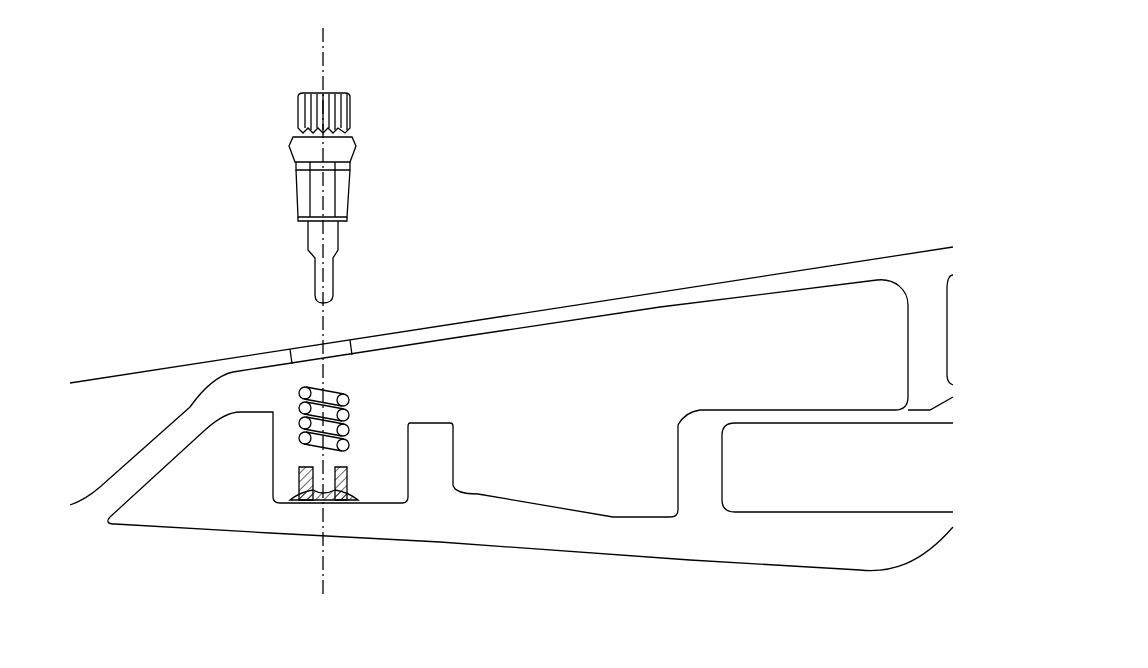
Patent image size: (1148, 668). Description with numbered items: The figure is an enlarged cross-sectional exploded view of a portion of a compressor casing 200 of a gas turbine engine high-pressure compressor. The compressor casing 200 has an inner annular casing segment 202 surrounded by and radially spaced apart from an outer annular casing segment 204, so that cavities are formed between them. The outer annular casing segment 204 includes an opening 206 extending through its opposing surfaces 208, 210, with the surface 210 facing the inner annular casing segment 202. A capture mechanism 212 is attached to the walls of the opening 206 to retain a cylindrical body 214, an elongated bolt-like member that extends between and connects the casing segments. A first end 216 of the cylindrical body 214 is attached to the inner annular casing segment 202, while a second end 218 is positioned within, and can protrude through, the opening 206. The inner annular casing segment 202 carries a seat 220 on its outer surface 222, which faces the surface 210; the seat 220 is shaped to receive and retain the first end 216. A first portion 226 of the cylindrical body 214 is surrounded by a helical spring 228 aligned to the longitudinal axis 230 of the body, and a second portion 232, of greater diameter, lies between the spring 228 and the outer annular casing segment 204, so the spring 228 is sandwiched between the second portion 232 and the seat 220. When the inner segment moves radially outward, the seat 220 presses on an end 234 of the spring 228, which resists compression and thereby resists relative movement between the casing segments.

The compressor casing 200 is at (128, 40).
The inner annular casing segment 202 is at (480, 495).
The outer annular casing segment 204 is at (132, 372).
The opening 206 is at (340, 332).
The surface 208 is at (482, 317).
The surface 210 is at (508, 330).
The capture mechanism 212 is at (345, 360).
The cylindrical body 214 is at (350, 122).
The first end 216 is at (318, 308).
The second end 218 is at (337, 90).
The seat 220 is at (342, 482).
The surface 222 is at (393, 502).
The first portion 226 is at (338, 237).
The spring 228 is at (300, 400).
The longitudinal axis 230 is at (324, 54).
The second portion 232 is at (348, 180).
The end of the spring 234 is at (350, 443).